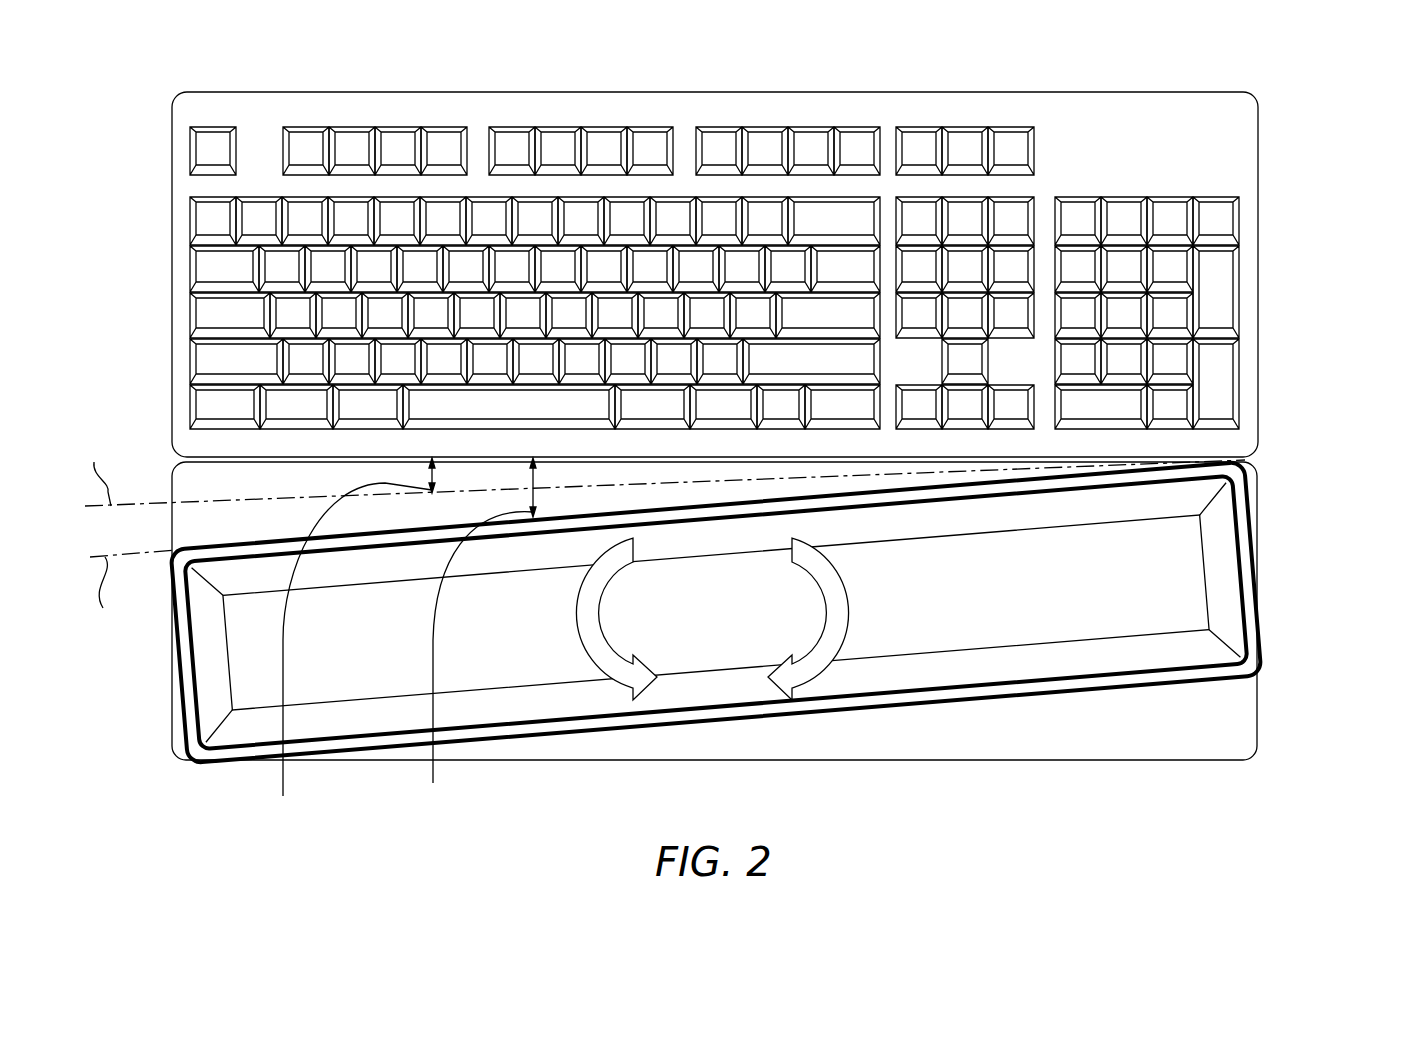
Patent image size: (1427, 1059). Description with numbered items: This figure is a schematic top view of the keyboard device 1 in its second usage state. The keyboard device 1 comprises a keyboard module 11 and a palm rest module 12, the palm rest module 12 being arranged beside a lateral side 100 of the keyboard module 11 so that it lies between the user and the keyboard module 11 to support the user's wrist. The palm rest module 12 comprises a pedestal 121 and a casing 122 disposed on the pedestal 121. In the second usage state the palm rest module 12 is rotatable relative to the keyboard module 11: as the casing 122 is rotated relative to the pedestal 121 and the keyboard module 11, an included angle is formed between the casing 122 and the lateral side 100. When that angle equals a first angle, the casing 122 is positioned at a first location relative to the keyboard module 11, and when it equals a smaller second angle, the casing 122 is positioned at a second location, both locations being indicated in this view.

The keyboard device 1 is at (1386, 66).
The keyboard module 11 is at (1240, 153).
The palm rest module 12 is at (781, 613).
The pedestal 121 is at (1238, 722).
The casing 122 is at (1338, 740).
The lateral side 100 is at (243, 456).